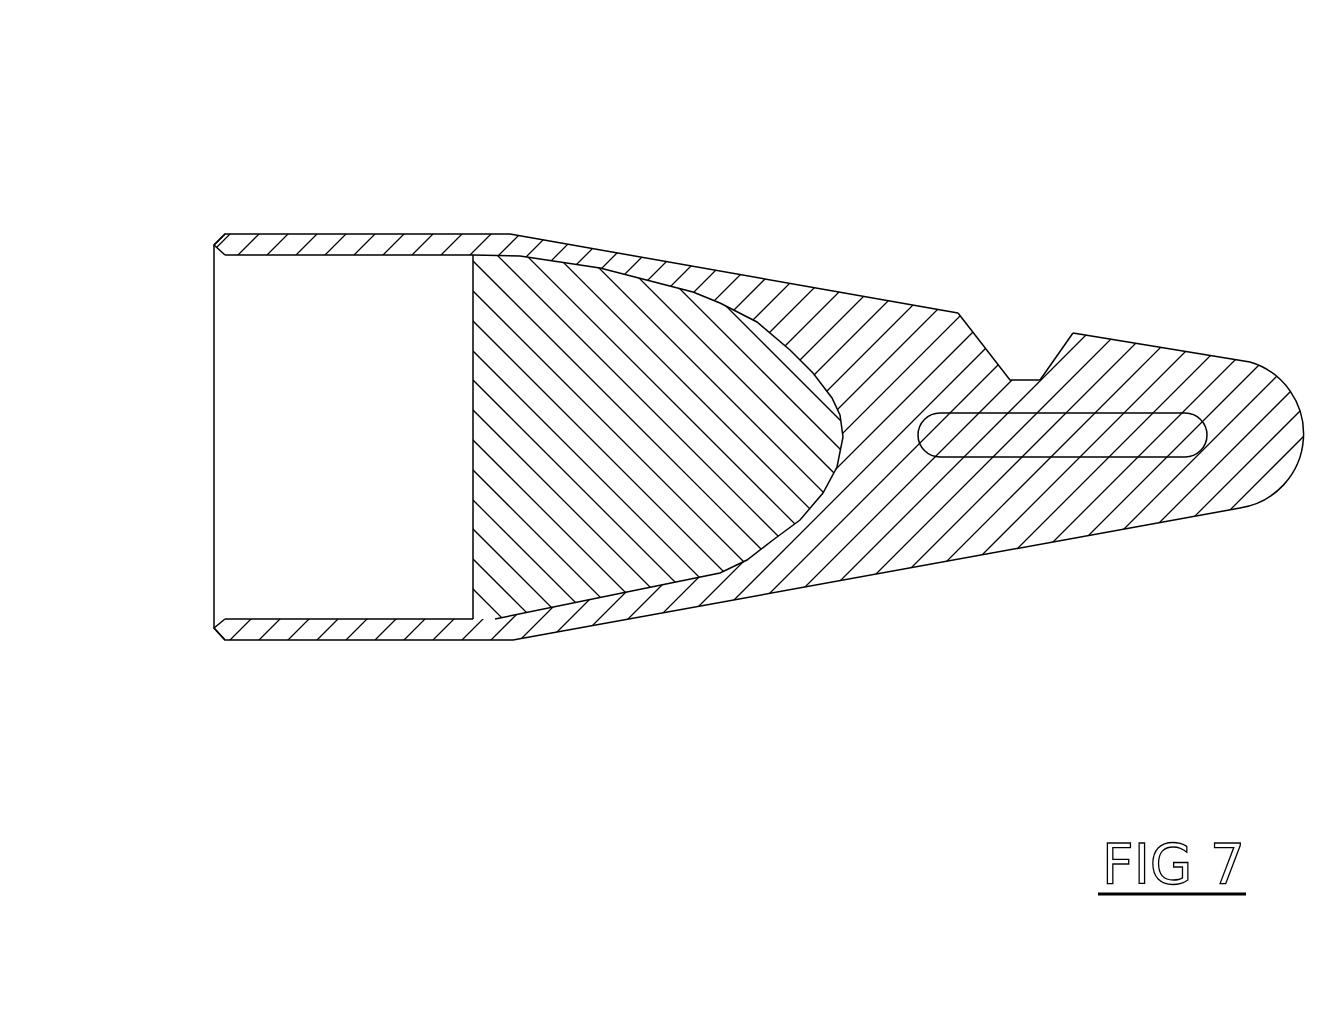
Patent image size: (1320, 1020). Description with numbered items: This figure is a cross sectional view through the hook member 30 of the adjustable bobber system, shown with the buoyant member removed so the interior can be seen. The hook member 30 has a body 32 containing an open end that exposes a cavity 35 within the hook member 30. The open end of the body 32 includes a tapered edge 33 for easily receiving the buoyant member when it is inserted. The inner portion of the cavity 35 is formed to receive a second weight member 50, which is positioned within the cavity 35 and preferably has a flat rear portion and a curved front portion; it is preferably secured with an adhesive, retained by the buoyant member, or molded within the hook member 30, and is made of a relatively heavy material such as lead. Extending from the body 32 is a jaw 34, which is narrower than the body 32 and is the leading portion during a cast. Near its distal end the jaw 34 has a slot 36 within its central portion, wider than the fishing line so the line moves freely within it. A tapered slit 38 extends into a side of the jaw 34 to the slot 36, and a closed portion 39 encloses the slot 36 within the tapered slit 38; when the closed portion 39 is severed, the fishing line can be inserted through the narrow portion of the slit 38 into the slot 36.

The hook member 30 is at (569, 244).
The body 32 is at (903, 515).
The tapered edge 33 is at (203, 262).
The jaw 34 is at (1290, 478).
The cavity 35 is at (362, 363).
The slot 36 is at (993, 460).
The tapered slit 38 is at (983, 350).
The closed portion 39 is at (1028, 377).
The second weight member 50 is at (683, 367).